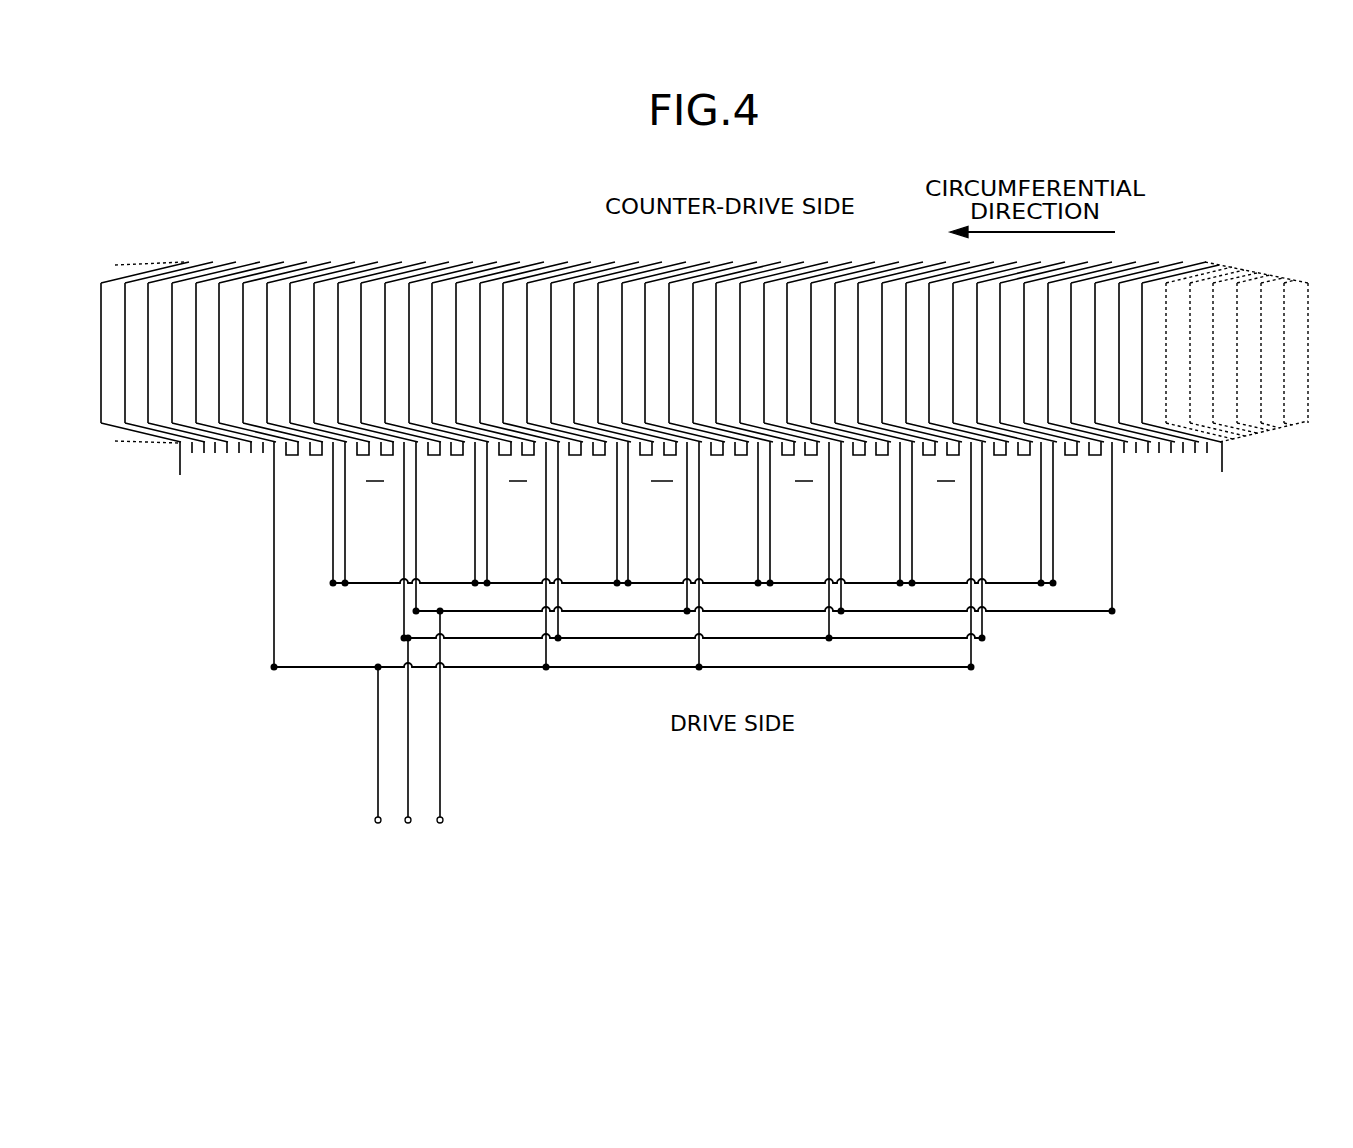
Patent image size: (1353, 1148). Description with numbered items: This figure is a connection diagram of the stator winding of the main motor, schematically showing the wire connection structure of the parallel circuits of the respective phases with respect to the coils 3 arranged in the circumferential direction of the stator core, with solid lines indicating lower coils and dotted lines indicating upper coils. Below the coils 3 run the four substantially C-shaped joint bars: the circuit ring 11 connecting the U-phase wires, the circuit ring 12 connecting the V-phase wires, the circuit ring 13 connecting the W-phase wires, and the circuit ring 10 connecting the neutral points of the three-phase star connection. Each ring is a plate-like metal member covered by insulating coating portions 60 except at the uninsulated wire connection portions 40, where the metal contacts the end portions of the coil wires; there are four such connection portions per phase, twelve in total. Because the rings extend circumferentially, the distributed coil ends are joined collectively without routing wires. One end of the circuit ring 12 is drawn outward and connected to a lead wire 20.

The coils 3 is at (1213, 263).
The circuit ring 10 is at (868, 586).
The circuit ring 11 is at (834, 670).
The circuit ring 12 is at (937, 641).
The circuit ring 13 is at (906, 614).
The lead wire 20 is at (453, 860).
The uninsulated wire connection portions 40 is at (711, 607).
The insulating coating portions 60 is at (707, 676).